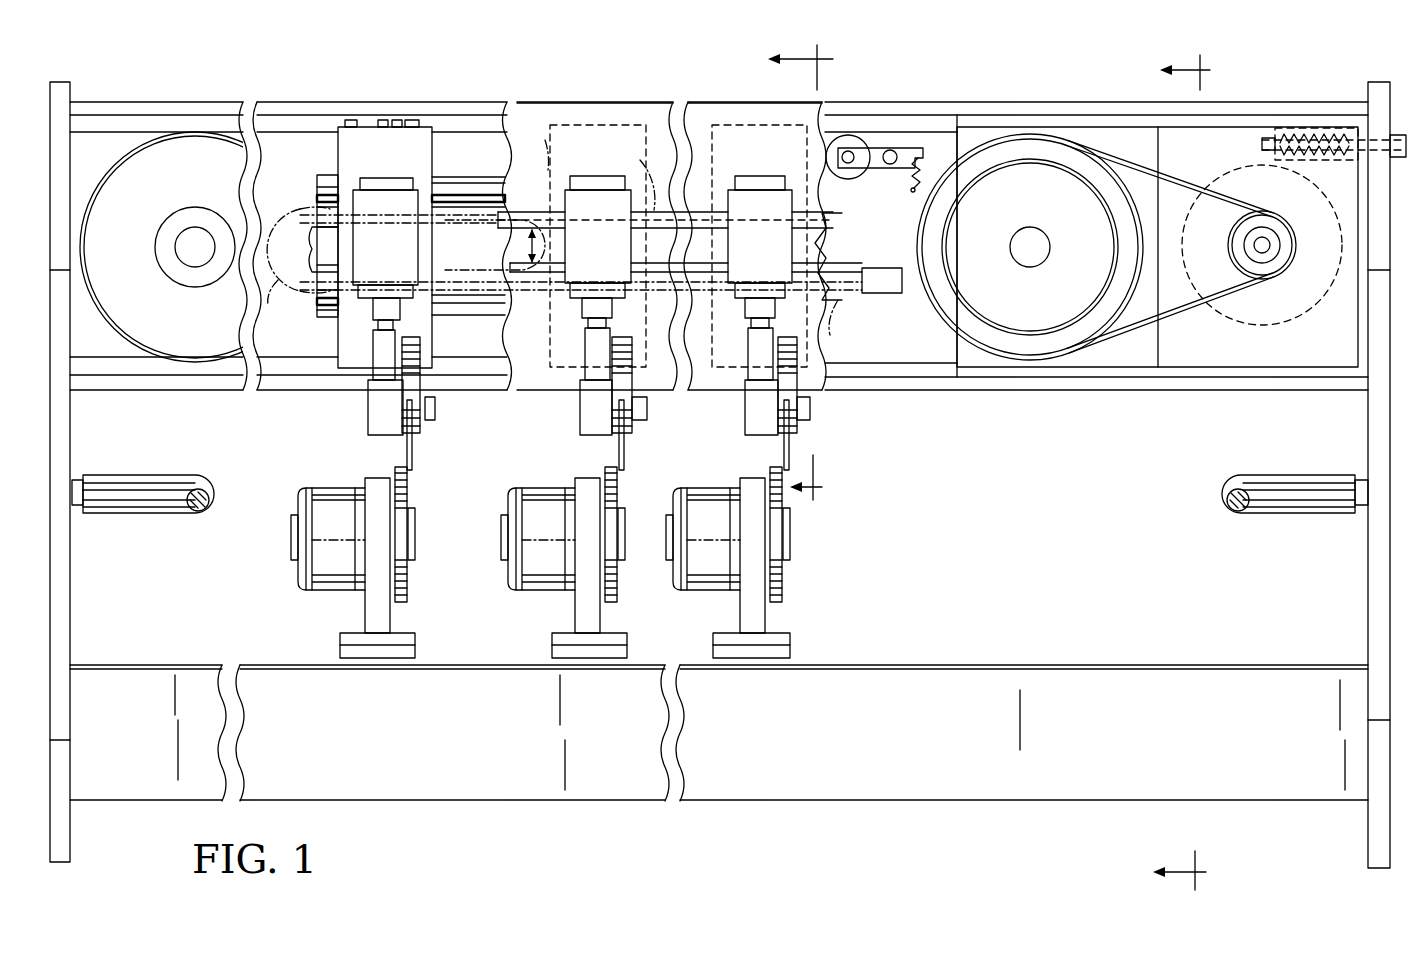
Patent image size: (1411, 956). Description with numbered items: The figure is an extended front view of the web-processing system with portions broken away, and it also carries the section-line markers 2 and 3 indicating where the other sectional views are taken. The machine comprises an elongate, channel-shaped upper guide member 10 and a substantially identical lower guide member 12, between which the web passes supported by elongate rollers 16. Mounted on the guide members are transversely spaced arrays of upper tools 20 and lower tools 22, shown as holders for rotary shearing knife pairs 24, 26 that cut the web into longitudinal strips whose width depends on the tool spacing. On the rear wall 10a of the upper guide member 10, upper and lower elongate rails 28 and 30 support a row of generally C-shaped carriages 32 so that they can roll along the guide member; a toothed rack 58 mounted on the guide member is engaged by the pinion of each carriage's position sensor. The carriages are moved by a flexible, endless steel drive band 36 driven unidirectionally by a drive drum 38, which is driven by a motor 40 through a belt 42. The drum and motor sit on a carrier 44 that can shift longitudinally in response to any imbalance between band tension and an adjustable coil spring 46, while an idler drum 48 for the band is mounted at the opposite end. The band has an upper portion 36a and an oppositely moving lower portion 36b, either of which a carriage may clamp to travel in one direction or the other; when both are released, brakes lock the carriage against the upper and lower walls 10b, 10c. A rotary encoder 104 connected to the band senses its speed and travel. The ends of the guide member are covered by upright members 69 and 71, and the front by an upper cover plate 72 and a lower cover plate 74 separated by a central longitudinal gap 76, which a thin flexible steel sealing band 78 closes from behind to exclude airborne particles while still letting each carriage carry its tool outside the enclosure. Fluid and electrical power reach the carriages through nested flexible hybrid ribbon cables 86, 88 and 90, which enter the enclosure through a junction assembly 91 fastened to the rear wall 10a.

The upper guide member 10 is at (1290, 80).
The rear wall 10a is at (295, 128).
The upper wall 10b is at (236, 102).
The lower wall 10c is at (322, 393).
The lower guide member 12 is at (1263, 662).
The elongate roller 16 is at (172, 518).
The upper tool 20 is at (397, 250).
The lower tool 22 is at (391, 610).
The rotary shearing knife 24 is at (414, 457).
The rotary shearing knife 26 is at (406, 490).
The upper elongate rail 28 is at (462, 126).
The lower elongate rail 30 is at (484, 305).
The carriage 32 is at (410, 128).
The drive band 36 is at (1090, 360).
The upper band portion 36a is at (945, 127).
The lower band portion 36b is at (900, 372).
The drive drum 38 is at (1045, 142).
The motor 40 is at (1328, 312).
The belt 42 is at (1194, 304).
The carrier 44 is at (1350, 375).
The adjustable coil spring 46 is at (1329, 128).
The idler drum 48 is at (175, 158).
The toothed rack 58 is at (318, 191).
The upright member 69 is at (73, 177).
The upright member 71 is at (1380, 88).
The upper cover plate 72 is at (540, 133).
The lower cover plate 74 is at (548, 390).
The central longitudinal gap 76 is at (529, 246).
The sealing band 78 is at (830, 239).
The ribbon cable 86 is at (862, 318).
The ribbon cable 88 is at (543, 163).
The ribbon cable 90 is at (655, 192).
The junction assembly 91 is at (900, 292).
The rotary encoder 104 is at (845, 147).
The section line 2 is at (1192, 472).
The section line 3 is at (808, 273).